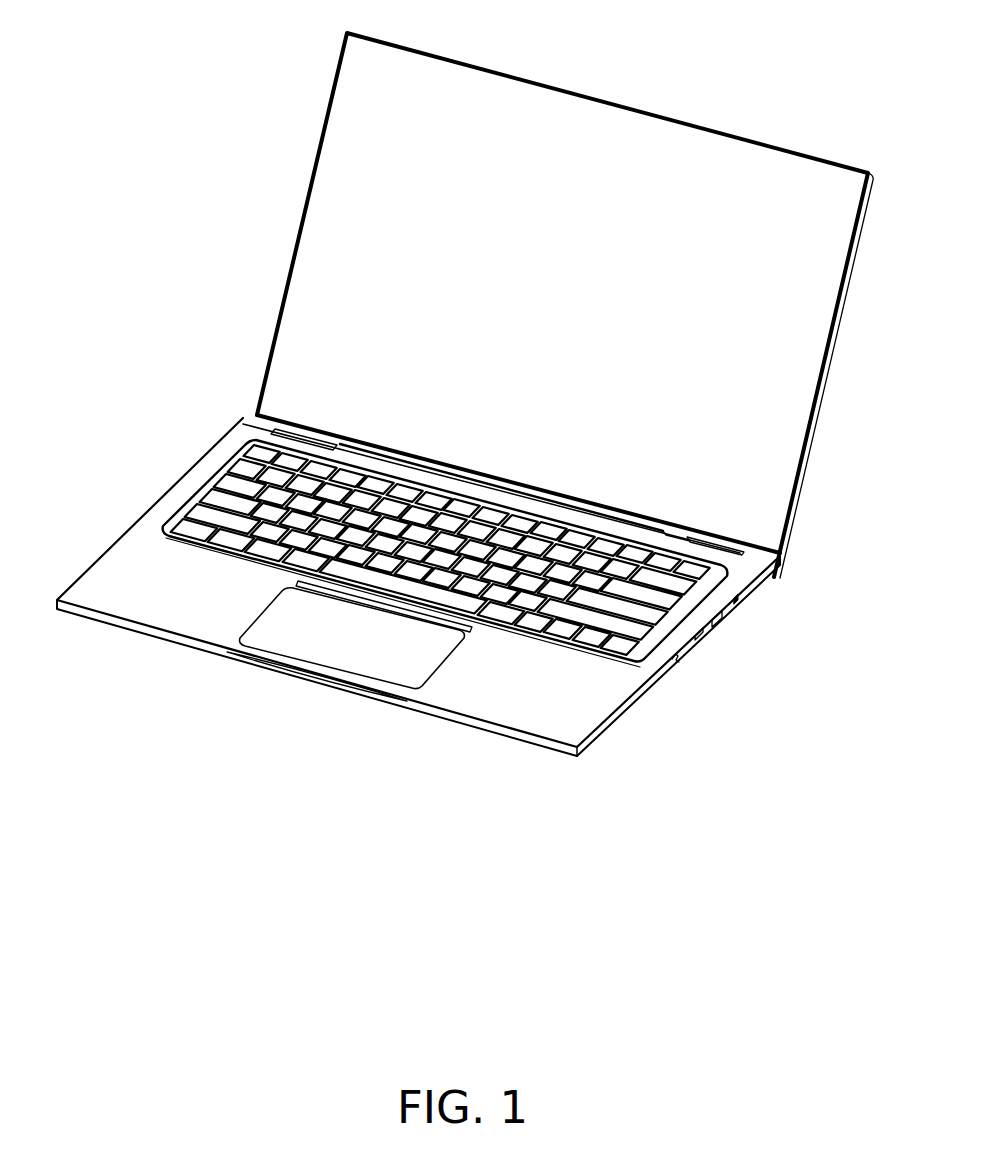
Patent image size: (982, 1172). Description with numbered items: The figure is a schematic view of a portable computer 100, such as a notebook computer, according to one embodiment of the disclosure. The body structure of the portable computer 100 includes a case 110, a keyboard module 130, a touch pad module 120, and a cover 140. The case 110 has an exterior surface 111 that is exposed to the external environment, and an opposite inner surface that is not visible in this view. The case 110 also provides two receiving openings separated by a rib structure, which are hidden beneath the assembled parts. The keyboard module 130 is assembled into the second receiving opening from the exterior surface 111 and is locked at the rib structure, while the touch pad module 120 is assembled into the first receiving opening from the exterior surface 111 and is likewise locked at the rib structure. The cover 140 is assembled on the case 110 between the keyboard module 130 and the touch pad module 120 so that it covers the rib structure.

The portable computer 100 is at (849, 984).
The case 110 is at (190, 467).
The exterior surface 111 is at (129, 573).
The touch pad module 120 is at (407, 670).
The keyboard module 130 is at (597, 620).
The cover 140 is at (320, 585).